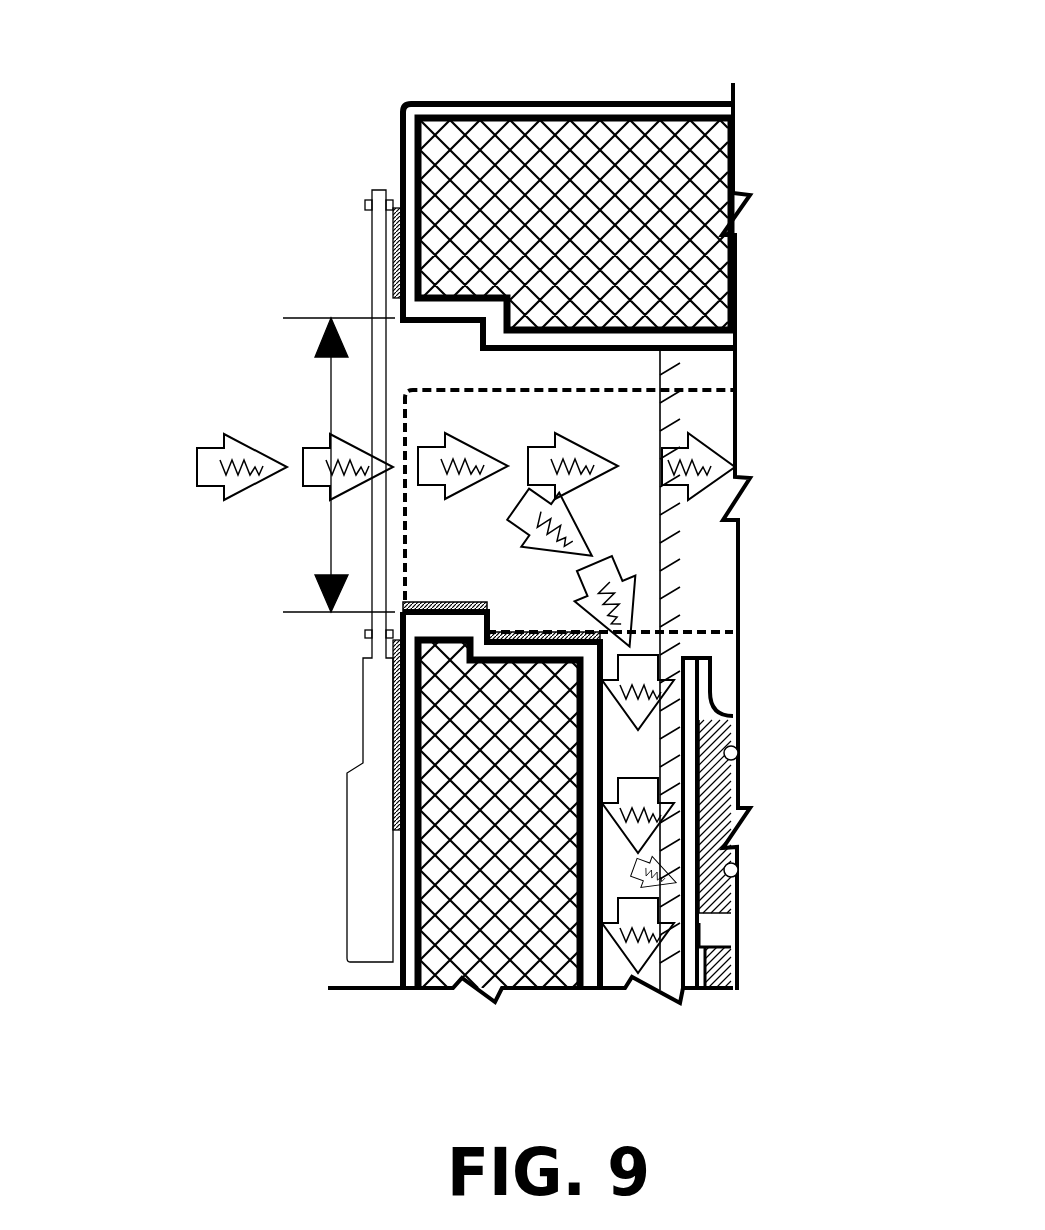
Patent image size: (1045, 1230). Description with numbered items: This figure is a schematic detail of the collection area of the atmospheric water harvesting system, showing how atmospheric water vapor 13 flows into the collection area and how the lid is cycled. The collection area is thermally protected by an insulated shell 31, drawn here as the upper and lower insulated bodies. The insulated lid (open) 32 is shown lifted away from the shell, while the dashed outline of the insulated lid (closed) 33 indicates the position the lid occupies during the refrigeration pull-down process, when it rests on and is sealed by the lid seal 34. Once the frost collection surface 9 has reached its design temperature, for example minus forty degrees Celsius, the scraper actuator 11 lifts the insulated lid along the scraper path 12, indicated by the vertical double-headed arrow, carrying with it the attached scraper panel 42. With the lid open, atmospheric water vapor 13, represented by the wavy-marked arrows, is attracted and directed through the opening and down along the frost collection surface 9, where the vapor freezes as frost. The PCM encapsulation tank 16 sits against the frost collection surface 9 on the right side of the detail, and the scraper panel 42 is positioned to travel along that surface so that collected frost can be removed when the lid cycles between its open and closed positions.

The frost collection surface 9 is at (705, 758).
The scraper actuator 11 is at (357, 830).
The scraper path 12 is at (395, 463).
The atmospheric water vapor 13 is at (197, 458).
The PCM encapsulation tank 16 is at (710, 702).
The insulated shell 31 is at (455, 888).
The insulated lid (open) 32 is at (527, 112).
The insulated lid (closed) 33 is at (718, 389).
The lid seal 34 is at (452, 603).
The scraper panel 42 is at (700, 832).